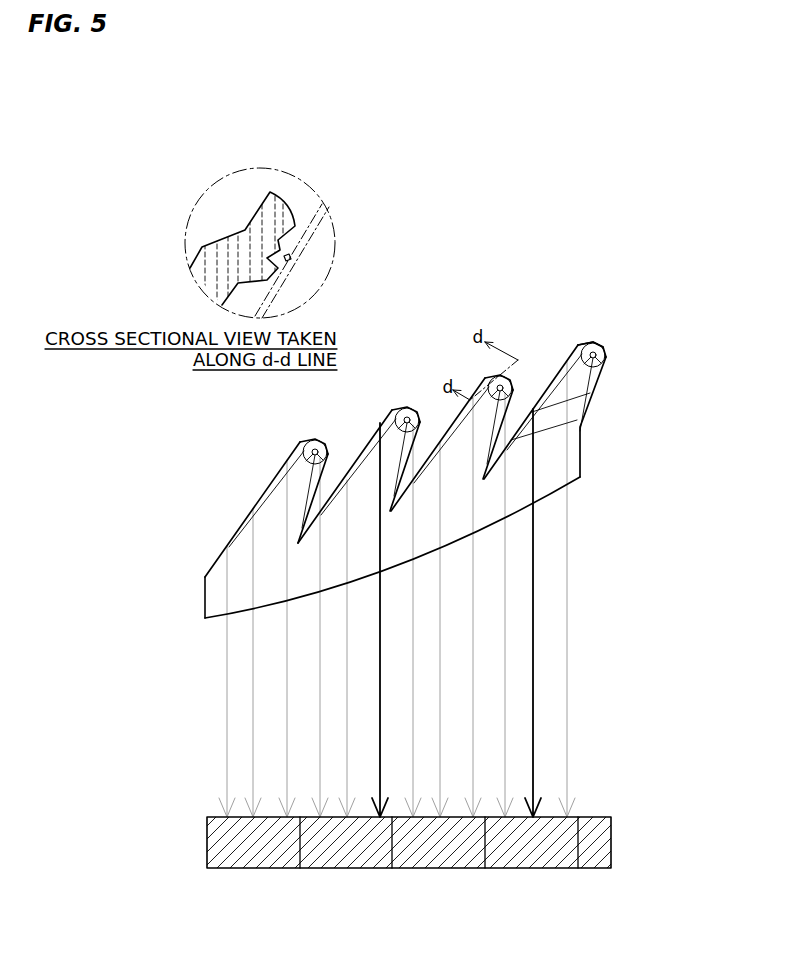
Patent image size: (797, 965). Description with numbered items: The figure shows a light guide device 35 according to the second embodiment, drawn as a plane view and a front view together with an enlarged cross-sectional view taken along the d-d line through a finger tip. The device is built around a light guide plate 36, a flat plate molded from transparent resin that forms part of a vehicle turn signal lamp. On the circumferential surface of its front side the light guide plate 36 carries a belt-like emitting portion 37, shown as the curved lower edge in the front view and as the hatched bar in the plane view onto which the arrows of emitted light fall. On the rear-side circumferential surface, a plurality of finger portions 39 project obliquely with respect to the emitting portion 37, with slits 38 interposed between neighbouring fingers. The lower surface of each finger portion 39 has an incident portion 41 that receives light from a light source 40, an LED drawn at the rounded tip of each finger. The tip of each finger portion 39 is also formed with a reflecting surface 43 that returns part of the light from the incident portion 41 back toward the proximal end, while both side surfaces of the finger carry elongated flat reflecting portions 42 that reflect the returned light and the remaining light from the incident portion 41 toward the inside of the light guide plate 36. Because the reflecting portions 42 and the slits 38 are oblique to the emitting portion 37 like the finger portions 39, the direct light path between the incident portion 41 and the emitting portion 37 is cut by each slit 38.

The light guide device 35 is at (449, 338).
The light guide plate 36 is at (215, 591).
The emitting portion 37 is at (398, 574).
The slit 38 is at (338, 467).
The finger portion 39 is at (298, 473).
The light source 40 is at (302, 446).
The incident portion 41 is at (408, 410).
The reflecting portion 42 is at (370, 432).
The reflecting surface 43 is at (582, 345).